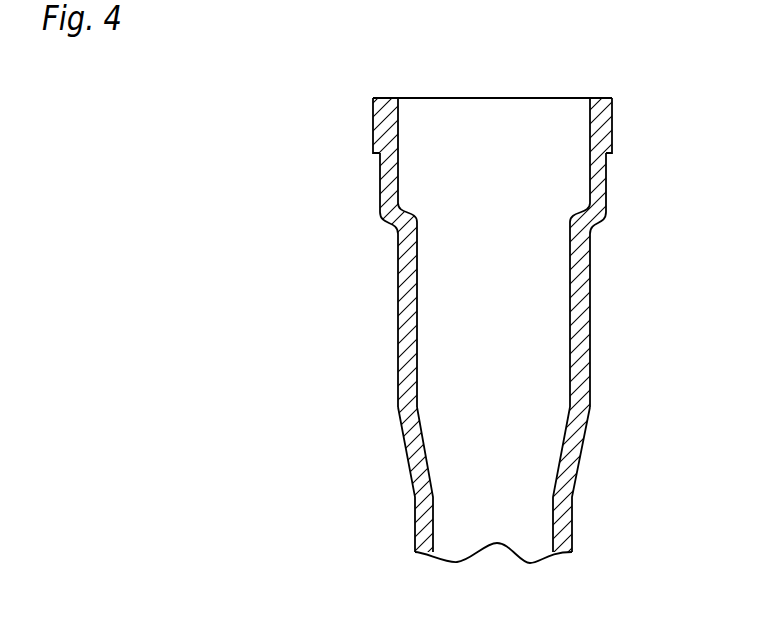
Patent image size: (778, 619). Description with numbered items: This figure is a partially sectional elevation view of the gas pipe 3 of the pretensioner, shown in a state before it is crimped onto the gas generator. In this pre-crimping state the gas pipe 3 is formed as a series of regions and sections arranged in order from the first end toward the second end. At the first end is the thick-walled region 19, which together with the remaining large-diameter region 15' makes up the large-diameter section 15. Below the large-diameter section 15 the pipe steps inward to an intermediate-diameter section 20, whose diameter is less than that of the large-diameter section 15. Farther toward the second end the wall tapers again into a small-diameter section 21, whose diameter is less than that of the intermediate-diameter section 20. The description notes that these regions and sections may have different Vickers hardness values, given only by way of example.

The gas pipe 3 is at (389, 345).
The large-diameter section 15 is at (334, 178).
The large-diameter region 15' is at (529, 193).
The thick-walled region 19 is at (614, 118).
The intermediate-diameter section 20 is at (592, 300).
The small-diameter section 21 is at (566, 525).